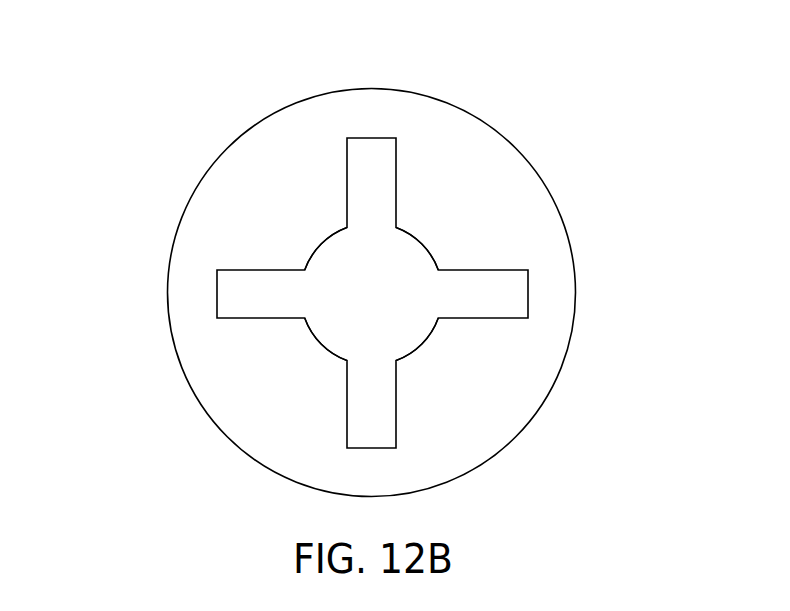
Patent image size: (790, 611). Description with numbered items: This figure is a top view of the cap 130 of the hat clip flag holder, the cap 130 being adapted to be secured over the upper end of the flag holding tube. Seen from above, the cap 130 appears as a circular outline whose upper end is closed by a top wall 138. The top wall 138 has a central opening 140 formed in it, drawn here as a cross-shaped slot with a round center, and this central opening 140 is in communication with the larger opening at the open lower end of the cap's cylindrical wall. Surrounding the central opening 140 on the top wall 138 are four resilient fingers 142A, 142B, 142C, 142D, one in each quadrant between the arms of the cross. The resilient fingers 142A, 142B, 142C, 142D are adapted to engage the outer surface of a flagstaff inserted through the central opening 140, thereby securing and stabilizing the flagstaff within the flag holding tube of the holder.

The cap 130 is at (217, 105).
The top wall 138 is at (450, 172).
The central opening 140 is at (359, 241).
The resilient finger 142A is at (428, 243).
The resilient finger 142B is at (315, 243).
The resilient finger 142C is at (315, 346).
The resilient finger 142D is at (428, 346).